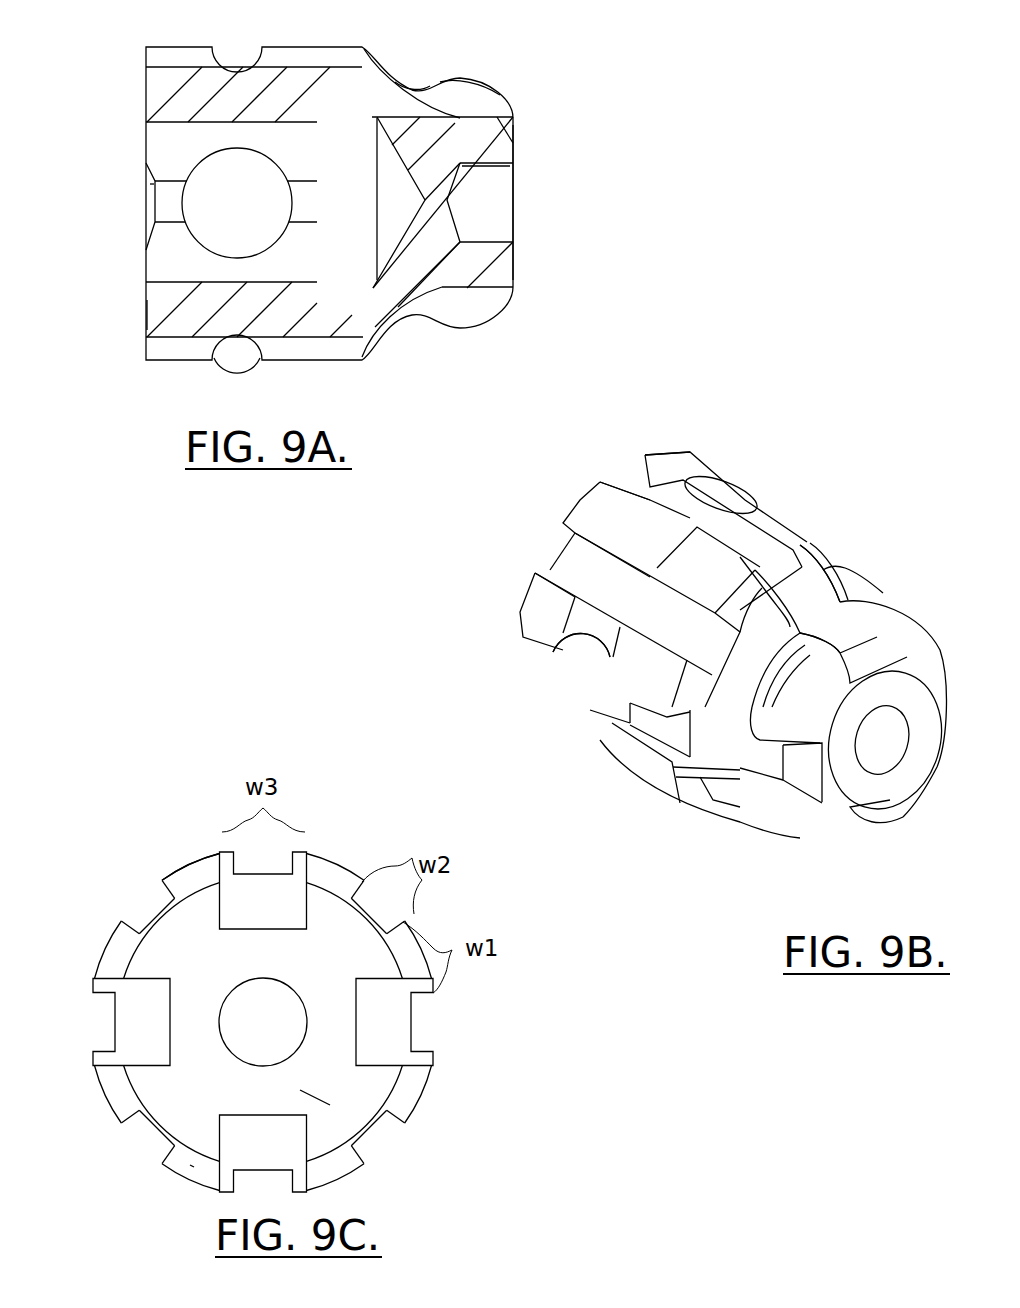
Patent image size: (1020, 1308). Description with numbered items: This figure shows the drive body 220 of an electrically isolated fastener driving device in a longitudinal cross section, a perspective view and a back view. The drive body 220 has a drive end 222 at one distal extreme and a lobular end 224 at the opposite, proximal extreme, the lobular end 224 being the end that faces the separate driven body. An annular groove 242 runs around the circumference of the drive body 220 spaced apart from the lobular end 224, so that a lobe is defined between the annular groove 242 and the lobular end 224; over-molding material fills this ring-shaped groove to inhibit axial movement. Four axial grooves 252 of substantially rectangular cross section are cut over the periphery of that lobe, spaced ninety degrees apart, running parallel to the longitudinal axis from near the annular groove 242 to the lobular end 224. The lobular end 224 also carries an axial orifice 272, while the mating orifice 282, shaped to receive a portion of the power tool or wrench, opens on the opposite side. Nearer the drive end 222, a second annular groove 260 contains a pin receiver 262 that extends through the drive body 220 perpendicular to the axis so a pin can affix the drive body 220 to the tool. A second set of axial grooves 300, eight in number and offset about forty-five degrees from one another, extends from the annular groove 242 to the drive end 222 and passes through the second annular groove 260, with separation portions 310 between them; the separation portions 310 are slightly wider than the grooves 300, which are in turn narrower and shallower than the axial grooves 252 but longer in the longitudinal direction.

In FIG. 9A, the drive body 220 is at (329, 203).
In FIG. 9B, the drive body 220 is at (733, 645).
In FIG. 9C, the drive body 220 is at (263, 1022).
In FIG. 9A, the drive end 222 is at (147, 318).
In FIG. 9B, the drive end 222 is at (620, 628).
In FIG. 9A, the lobular end 224 is at (515, 142).
In FIG. 9B, the lobular end 224 is at (855, 795).
In FIG. 9C, the lobular end 224 is at (325, 1100).
In FIG. 9A, the annular groove 242 is at (413, 82).
In FIG. 9B, the annular groove 242 is at (850, 578).
In FIG. 9C, the annular groove 242 is at (192, 1163).
In FIG. 9A, the axial grooves 252 is at (470, 105).
In FIG. 9B, the axial grooves 252 is at (830, 617).
In FIG. 9C, the axial grooves 252 is at (243, 912).
In FIG. 9A, the second annular groove 260 is at (237, 352).
In FIG. 9B, the second annular groove 260 is at (627, 542).
In FIG. 9A, the pin receiver 262 is at (228, 202).
In FIG. 9B, the pin receiver 262 is at (588, 692).
In FIG. 9A, the axial orifice 272 is at (487, 193).
In FIG. 9B, the axial orifice 272 is at (872, 752).
In FIG. 9C, the axial orifice 272 is at (252, 1005).
In FIG. 9A, the mating orifice 282 is at (190, 247).
In FIG. 9B, the second set of axial grooves 300 is at (652, 485).
In FIG. 9C, the second set of axial grooves 300 is at (100, 1006).
In FIG. 9B, the separation portions 310 is at (778, 510).
In FIG. 9C, the separation portions 310 is at (200, 868).